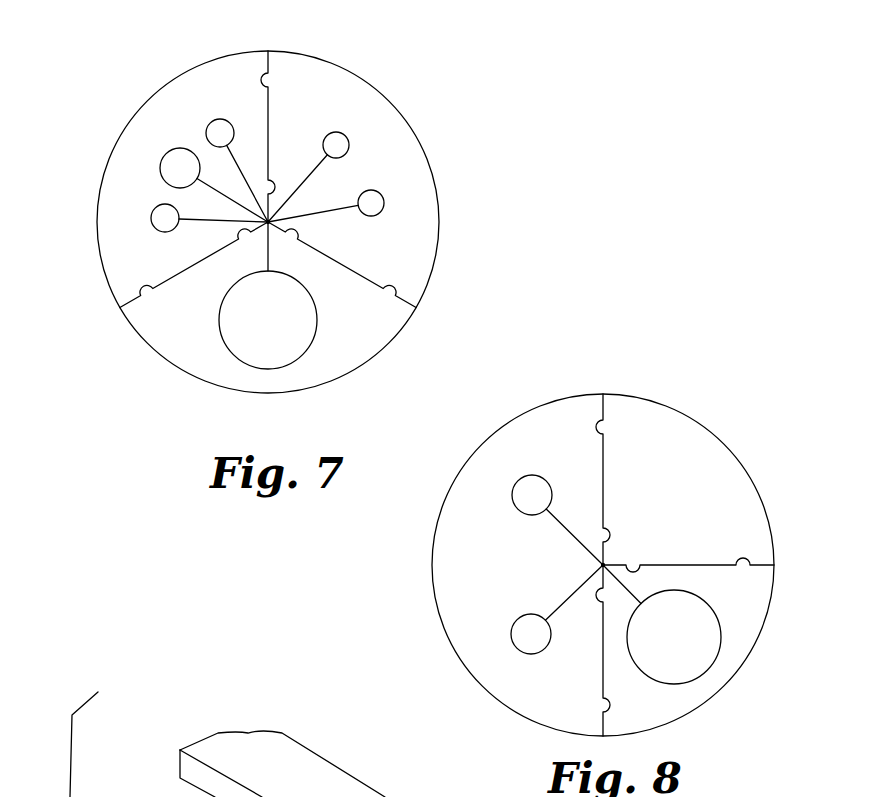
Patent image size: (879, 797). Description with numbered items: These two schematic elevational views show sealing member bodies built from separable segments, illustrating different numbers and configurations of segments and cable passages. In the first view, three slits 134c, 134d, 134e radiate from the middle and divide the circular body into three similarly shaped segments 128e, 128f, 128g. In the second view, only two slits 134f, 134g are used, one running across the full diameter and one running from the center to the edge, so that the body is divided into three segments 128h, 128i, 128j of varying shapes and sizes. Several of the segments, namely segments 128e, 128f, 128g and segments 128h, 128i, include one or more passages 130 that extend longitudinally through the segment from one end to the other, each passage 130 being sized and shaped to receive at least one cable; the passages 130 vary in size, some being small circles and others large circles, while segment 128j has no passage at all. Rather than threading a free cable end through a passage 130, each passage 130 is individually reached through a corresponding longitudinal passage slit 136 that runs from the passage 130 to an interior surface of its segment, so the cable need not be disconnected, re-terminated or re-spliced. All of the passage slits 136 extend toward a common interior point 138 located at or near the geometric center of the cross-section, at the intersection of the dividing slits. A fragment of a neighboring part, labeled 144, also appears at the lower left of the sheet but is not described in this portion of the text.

In FIG. 7, the segment 128e is at (330, 372).
In FIG. 7, the segment 128f is at (378, 102).
In FIG. 7, the segment 128g is at (105, 215).
In FIG. 8, the segment 128h is at (455, 631).
In FIG. 8, the segment 128i is at (757, 628).
In FIG. 8, the segment 128j is at (710, 452).
In FIG. 7, the passages 130 is at (206, 133).
In FIG. 8, the passages 130 is at (527, 504).
In FIG. 7, the slit 134c is at (125, 303).
In FIG. 7, the slit 134d is at (415, 310).
In FIG. 7, the slit 134e is at (273, 68).
In FIG. 8, the slit 134f is at (718, 570).
In FIG. 8, the slit 134g is at (604, 402).
In FIG. 7, the passage slits 136 is at (243, 155).
In FIG. 8, the passage slits 136 is at (578, 590).
In FIG. 7, the common interior point 138 is at (278, 232).
In FIG. 8, the common interior point 138 is at (606, 564).
In FIG. 8, the housing 144 is at (175, 790).